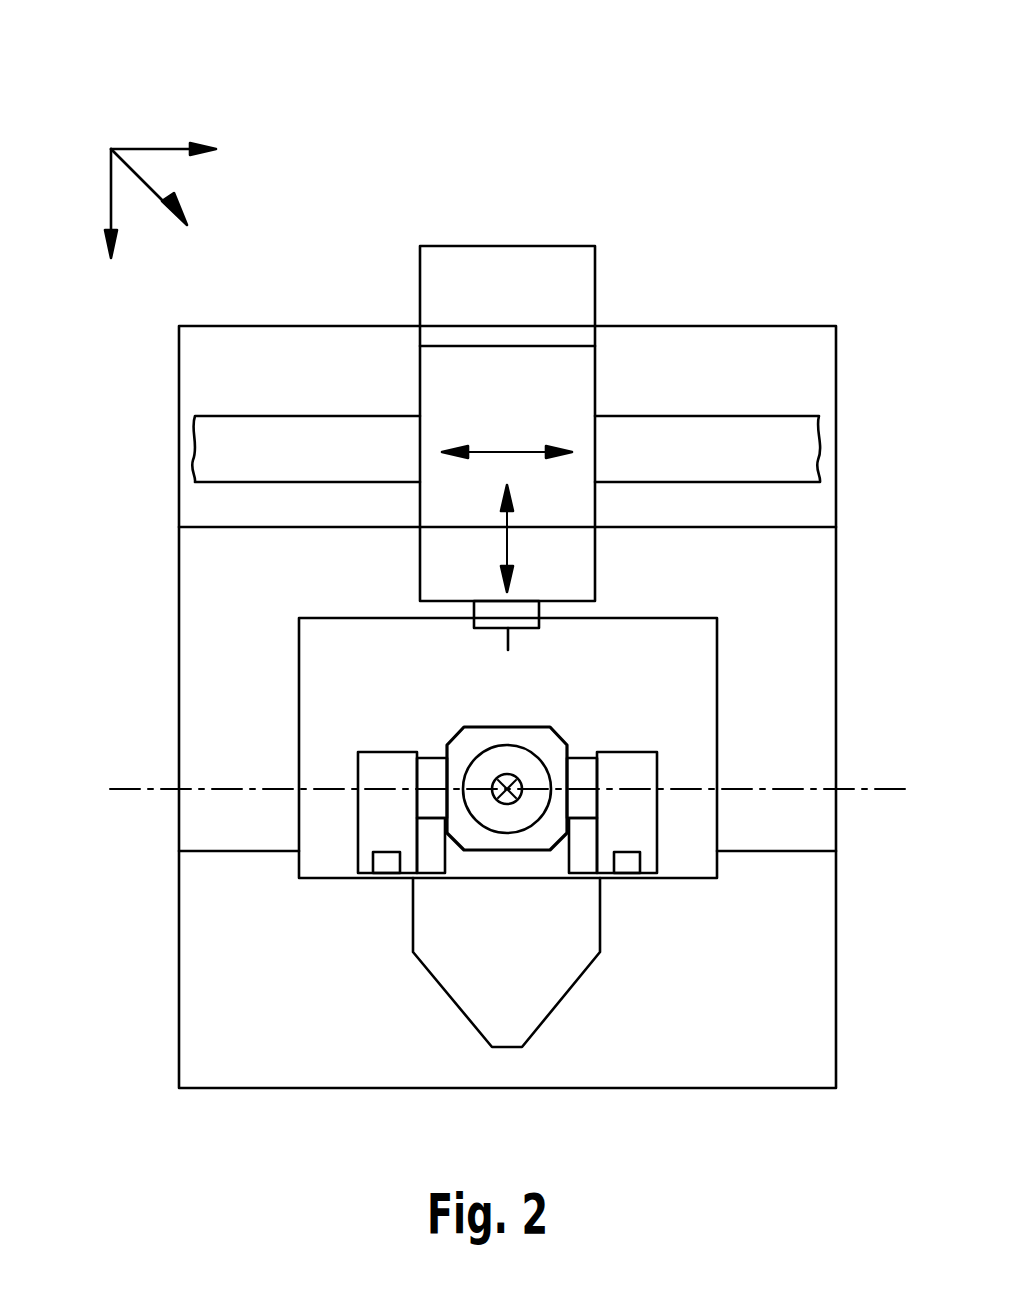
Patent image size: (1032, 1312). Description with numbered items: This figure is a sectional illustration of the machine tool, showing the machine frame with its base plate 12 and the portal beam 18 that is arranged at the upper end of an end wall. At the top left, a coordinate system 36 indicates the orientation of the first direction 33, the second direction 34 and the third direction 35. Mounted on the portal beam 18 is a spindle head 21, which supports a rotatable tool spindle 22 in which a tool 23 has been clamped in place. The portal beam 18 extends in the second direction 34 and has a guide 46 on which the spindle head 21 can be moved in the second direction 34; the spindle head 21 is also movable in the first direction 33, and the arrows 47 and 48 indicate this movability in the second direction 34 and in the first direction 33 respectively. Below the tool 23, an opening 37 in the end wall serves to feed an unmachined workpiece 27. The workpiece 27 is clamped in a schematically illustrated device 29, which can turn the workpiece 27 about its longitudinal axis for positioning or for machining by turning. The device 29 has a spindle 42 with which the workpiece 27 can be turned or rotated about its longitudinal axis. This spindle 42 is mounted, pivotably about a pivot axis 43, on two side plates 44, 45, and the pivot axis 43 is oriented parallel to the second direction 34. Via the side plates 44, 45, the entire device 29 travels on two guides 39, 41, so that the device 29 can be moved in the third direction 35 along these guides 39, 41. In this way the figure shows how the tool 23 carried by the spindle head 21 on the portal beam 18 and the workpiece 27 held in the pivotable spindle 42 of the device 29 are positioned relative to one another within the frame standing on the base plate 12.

The base plate 12 is at (245, 1046).
The portal beam 18 is at (723, 384).
The spindle head 21 is at (540, 430).
The tool spindle 22 is at (528, 618).
The tool 23 is at (512, 642).
The workpiece 27 is at (513, 800).
The device 29 is at (508, 797).
The first direction 33 is at (110, 189).
The second direction 34 is at (171, 147).
The third direction 35 is at (143, 189).
The coordinate system 36 is at (132, 146).
The opening 37 is at (690, 660).
The guide 39 is at (386, 868).
The guide 41 is at (631, 868).
The spindle 42 is at (527, 765).
The pivot axis 43 is at (805, 789).
The side plate 44 is at (376, 828).
The side plate 45 is at (639, 829).
The guide 46 is at (793, 453).
The arrow 47 is at (486, 450).
The arrow 48 is at (509, 538).